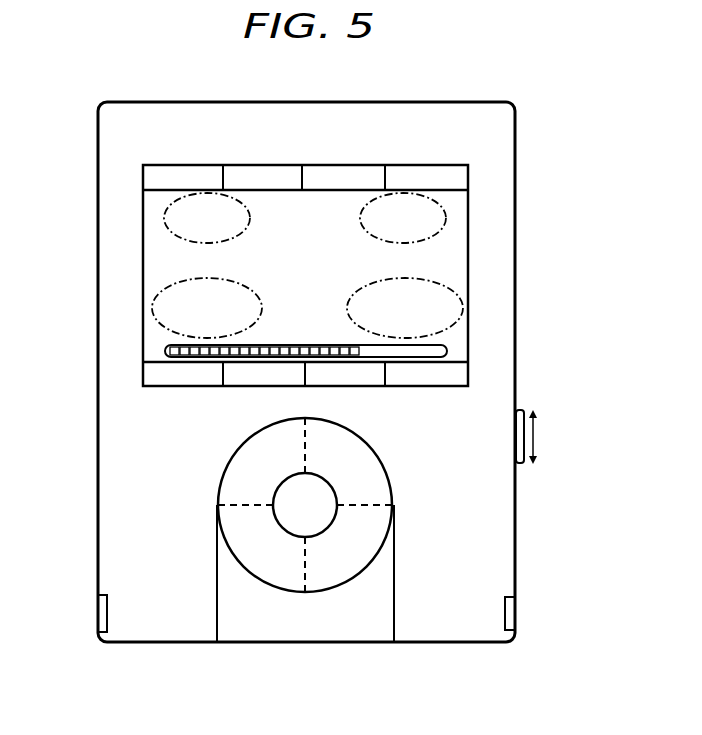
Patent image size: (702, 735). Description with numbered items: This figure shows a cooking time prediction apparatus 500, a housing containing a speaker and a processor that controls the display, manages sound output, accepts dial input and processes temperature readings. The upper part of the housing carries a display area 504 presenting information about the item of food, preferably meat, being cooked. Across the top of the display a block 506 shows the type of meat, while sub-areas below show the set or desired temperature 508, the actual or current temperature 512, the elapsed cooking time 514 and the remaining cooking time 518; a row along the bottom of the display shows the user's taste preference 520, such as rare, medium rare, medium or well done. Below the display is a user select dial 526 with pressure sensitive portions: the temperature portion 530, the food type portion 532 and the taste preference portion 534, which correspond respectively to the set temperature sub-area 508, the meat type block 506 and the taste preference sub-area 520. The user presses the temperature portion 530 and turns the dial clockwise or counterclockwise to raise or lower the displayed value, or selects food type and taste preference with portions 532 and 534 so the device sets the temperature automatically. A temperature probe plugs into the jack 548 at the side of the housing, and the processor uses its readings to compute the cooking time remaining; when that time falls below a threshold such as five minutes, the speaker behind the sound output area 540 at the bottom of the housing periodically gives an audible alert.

The apparatus 500 is at (467, 102).
The display area 504 is at (470, 258).
The block displaying type of meat 506 is at (330, 165).
The set temperature sub-area 508 is at (163, 215).
The actual temperature sub-area 512 is at (447, 218).
The elapsed cooking time sub-area 514 is at (155, 307).
The remaining cooking time sub-area 518 is at (462, 318).
The taste preference sub-area 520 is at (241, 387).
The user select dial 526 is at (308, 498).
The temperature setting portion 530 is at (231, 480).
The food type setting portion 532 is at (385, 492).
The taste preference setting portion 534 is at (231, 527).
The sound output area 540 is at (310, 632).
The jack 548 is at (98, 612).